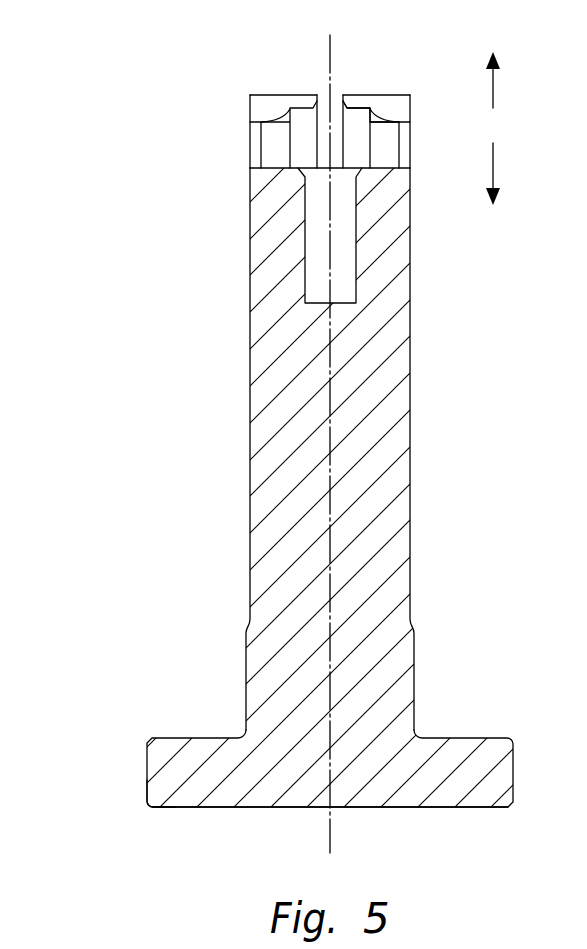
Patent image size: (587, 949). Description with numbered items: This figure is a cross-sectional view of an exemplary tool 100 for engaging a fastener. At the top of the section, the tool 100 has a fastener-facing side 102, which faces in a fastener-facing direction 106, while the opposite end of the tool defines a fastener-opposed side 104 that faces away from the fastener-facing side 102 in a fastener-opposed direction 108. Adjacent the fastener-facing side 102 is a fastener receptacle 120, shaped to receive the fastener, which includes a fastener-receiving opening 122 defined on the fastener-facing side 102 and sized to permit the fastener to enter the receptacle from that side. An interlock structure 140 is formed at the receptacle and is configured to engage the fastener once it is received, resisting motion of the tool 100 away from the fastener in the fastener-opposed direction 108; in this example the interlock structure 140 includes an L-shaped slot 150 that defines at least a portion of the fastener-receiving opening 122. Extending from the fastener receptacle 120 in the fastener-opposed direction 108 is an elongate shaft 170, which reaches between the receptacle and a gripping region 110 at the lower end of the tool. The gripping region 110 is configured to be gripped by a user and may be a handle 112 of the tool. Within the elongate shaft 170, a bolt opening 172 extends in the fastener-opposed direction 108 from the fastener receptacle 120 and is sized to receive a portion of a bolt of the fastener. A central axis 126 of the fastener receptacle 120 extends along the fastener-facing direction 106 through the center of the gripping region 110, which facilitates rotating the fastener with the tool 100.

The tool 100 is at (140, 263).
The fastener-facing side 102 is at (257, 95).
The fastener-opposed side 104 is at (165, 808).
The fastener-facing direction 106 is at (493, 98).
The fastener-opposed direction 108 is at (493, 158).
The gripping region 110 is at (138, 760).
The handle 112 is at (147, 782).
The fastener receptacle 120 is at (353, 135).
The fastener-receiving opening 122 is at (323, 82).
The central axis 126 is at (331, 838).
The interlock structure 140 is at (238, 110).
The L-shaped slot 150 is at (315, 165).
The elongate shaft 170 is at (239, 456).
The bolt opening 172 is at (303, 248).